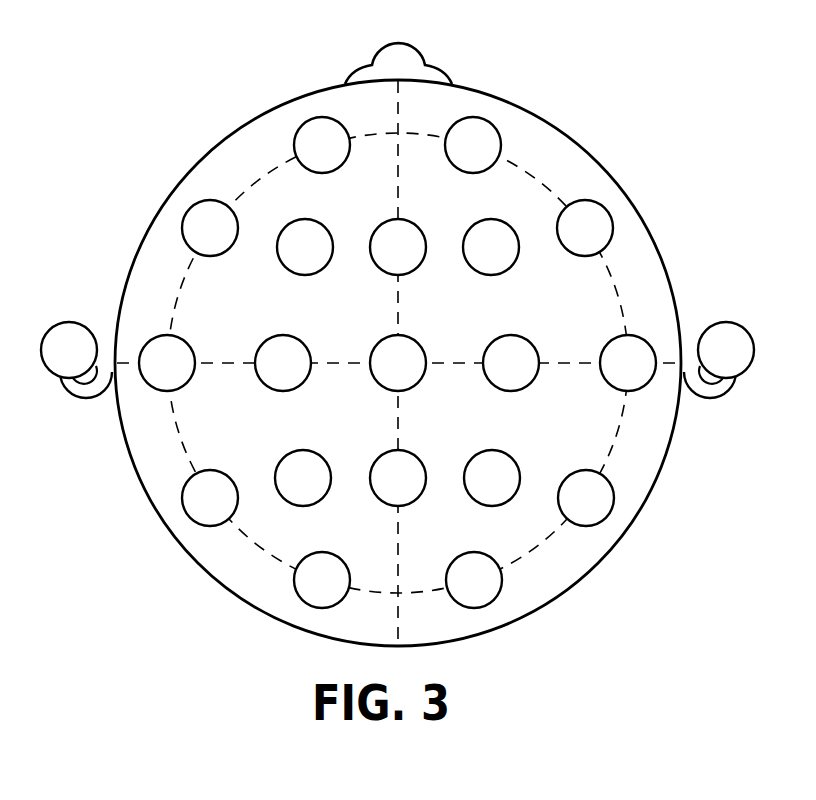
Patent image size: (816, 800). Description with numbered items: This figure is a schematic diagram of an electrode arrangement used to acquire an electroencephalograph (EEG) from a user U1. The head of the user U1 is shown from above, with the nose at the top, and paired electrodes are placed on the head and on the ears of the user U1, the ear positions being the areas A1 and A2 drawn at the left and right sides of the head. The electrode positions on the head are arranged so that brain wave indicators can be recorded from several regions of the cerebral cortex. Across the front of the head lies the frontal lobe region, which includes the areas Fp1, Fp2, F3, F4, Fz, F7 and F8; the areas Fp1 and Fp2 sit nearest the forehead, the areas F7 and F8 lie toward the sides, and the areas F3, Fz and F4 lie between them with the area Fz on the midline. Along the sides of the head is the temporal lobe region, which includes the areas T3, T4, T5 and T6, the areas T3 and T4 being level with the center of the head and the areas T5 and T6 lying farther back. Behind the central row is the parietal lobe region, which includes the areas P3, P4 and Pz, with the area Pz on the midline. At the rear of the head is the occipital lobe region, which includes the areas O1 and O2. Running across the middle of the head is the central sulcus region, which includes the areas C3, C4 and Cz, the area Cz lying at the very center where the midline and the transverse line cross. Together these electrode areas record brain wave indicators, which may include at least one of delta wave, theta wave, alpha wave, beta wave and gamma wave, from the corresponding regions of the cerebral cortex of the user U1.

The user U1 is at (597, 154).
The frontal lobe region area Fp1 is at (322, 145).
The frontal lobe region area Fp2 is at (473, 145).
The frontal lobe region area F7 is at (210, 228).
The frontal lobe region area F8 is at (585, 228).
The frontal lobe region area F3 is at (305, 247).
The frontal lobe region area Fz is at (398, 247).
The frontal lobe region area F4 is at (491, 247).
The temporal lobe region area T3 is at (167, 363).
The central sulcus region area C3 is at (283, 363).
The central sulcus region area Cz is at (398, 363).
The central sulcus region area C4 is at (511, 363).
The temporal lobe region area T4 is at (628, 363).
The temporal lobe region area T5 is at (210, 498).
The parietal lobe region area P3 is at (303, 478).
The parietal lobe region area Pz is at (398, 478).
The parietal lobe region area P4 is at (492, 478).
The temporal lobe region area T6 is at (586, 498).
The occipital lobe region area O1 is at (322, 580).
The occipital lobe region area O2 is at (474, 580).
The ear area A1 is at (69, 350).
The ear area A2 is at (726, 350).